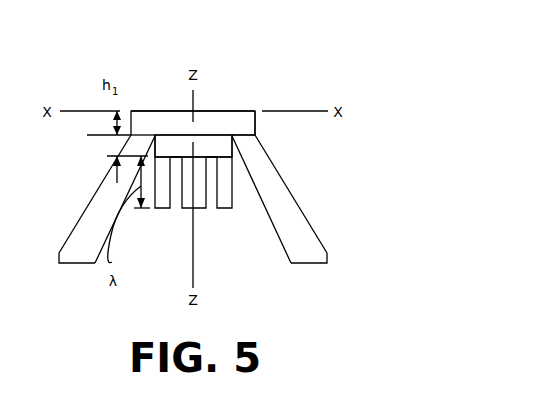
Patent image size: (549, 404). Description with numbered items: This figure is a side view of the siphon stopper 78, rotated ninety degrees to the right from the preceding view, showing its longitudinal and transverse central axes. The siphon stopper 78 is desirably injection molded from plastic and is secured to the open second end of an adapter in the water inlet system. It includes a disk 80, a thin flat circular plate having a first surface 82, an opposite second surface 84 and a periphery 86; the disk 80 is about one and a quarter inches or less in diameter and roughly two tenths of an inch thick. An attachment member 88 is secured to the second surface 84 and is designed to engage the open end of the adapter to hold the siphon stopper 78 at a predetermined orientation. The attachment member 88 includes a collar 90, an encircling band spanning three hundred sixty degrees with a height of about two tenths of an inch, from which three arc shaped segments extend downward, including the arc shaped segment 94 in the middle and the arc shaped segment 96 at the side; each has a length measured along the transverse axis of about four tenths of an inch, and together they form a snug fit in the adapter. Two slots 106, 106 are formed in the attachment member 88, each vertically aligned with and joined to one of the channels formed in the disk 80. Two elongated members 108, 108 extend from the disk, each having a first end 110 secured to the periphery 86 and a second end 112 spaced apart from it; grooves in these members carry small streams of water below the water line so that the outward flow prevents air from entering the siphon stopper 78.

The siphon stopper 78 is at (290, 66).
The disk 80 is at (138, 100).
The first surface 82 is at (250, 110).
The second surface 84 is at (254, 137).
The periphery 86 is at (256, 122).
The attachment member 88 is at (242, 211).
The collar 90 is at (155, 146).
The arc shaped segment 94 is at (199, 210).
The arc shaped segment 96 is at (162, 210).
The slot 106 is at (175, 210).
The elongated member 108 is at (90, 212).
The first end 110 is at (90, 212).
The second end 112 is at (78, 265).